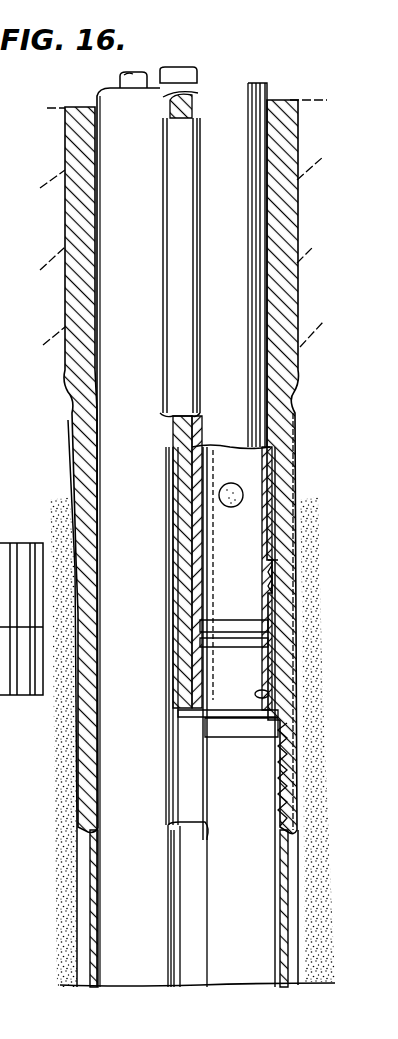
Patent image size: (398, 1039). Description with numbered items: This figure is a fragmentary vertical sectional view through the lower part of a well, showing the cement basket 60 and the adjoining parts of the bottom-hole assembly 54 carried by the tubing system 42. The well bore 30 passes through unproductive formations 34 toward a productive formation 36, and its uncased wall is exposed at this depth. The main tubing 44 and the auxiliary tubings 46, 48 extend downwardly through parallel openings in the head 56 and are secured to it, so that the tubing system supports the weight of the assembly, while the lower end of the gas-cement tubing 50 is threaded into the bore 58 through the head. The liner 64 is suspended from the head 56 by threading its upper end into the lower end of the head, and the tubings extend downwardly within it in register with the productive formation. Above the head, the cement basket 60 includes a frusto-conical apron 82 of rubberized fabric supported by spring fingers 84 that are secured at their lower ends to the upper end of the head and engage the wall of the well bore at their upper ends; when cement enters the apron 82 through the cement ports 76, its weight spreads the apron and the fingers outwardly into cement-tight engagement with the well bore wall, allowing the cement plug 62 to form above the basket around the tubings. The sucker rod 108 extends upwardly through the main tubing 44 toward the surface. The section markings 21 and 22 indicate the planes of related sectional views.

The well bore 30 is at (287, 100).
The unproductive formations 34 is at (52, 315).
The productive formation 36 is at (60, 986).
The tubing system 42 is at (85, 240).
The main tubing 44 is at (97, 98).
The auxiliary tubing 46 is at (200, 62).
The auxiliary tubing 48 is at (187, 130).
The gas-cement tubing 50 is at (265, 83).
The bottom-hole assembly 54 is at (306, 635).
The head 56 is at (280, 677).
The bore 58 is at (270, 694).
The cement retainer or basket 60 is at (300, 447).
The cement plug 62 is at (287, 236).
The liner or perforated casing 64 is at (272, 984).
The cement ports 76 is at (277, 483).
The frusto-conical apron 82 is at (297, 417).
The spring fingers 84 is at (70, 432).
The sucker rod 108 is at (147, 72).
The section line 21 is at (34, 505).
The section line 22 is at (38, 878).